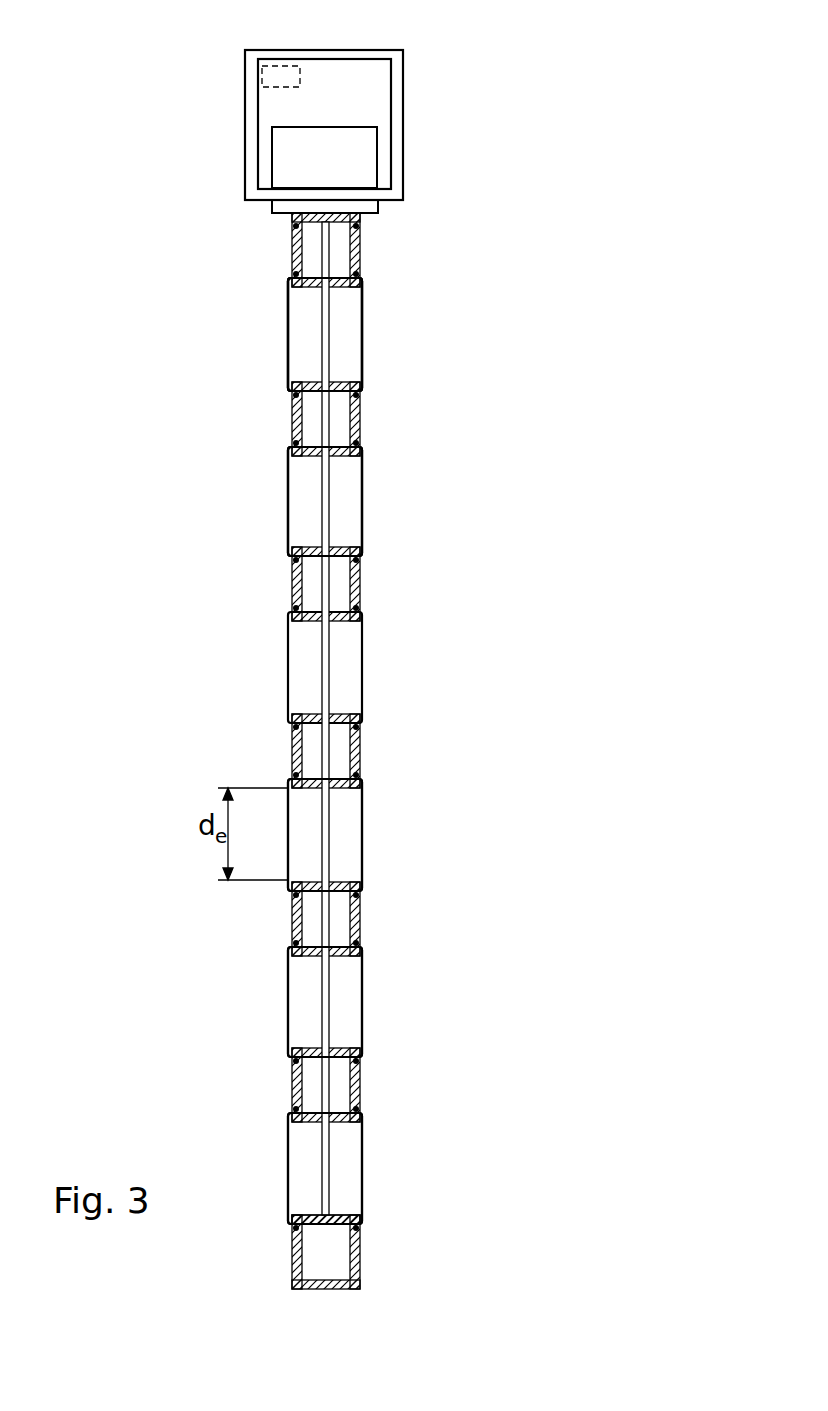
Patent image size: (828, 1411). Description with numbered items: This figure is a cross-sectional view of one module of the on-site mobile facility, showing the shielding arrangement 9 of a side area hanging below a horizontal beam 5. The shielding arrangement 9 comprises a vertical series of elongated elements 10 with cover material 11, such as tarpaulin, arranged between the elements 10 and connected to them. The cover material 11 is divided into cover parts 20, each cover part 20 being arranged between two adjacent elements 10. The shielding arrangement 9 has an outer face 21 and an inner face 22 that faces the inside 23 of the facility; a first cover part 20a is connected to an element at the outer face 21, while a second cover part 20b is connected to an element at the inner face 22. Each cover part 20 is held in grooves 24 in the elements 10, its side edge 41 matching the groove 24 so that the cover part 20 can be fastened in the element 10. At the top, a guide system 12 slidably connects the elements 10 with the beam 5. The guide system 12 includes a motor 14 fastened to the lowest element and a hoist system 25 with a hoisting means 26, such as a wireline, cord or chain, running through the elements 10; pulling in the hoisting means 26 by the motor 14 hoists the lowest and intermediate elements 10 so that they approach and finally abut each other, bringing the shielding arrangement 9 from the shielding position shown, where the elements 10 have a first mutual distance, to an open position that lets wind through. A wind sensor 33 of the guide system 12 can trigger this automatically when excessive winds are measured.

The beam 5 is at (401, 57).
The shielding arrangement 9 is at (578, 95).
The wind sensor 33 is at (272, 64).
The motor 14 is at (365, 138).
The guide system 12 is at (358, 167).
The hoist system 25 is at (285, 159).
The elongated elements 10 is at (360, 241).
The cover material 11 is at (362, 330).
The cover parts 20 is at (362, 363).
The first cover part 20a is at (362, 533).
The second cover part 20b is at (288, 538).
The outer face 21 is at (362, 298).
The inner face 22 is at (288, 327).
The inside 23 is at (105, 458).
The grooves 24 is at (355, 441).
The hoisting means 26 is at (323, 253).
The side edge 41 is at (358, 1225).